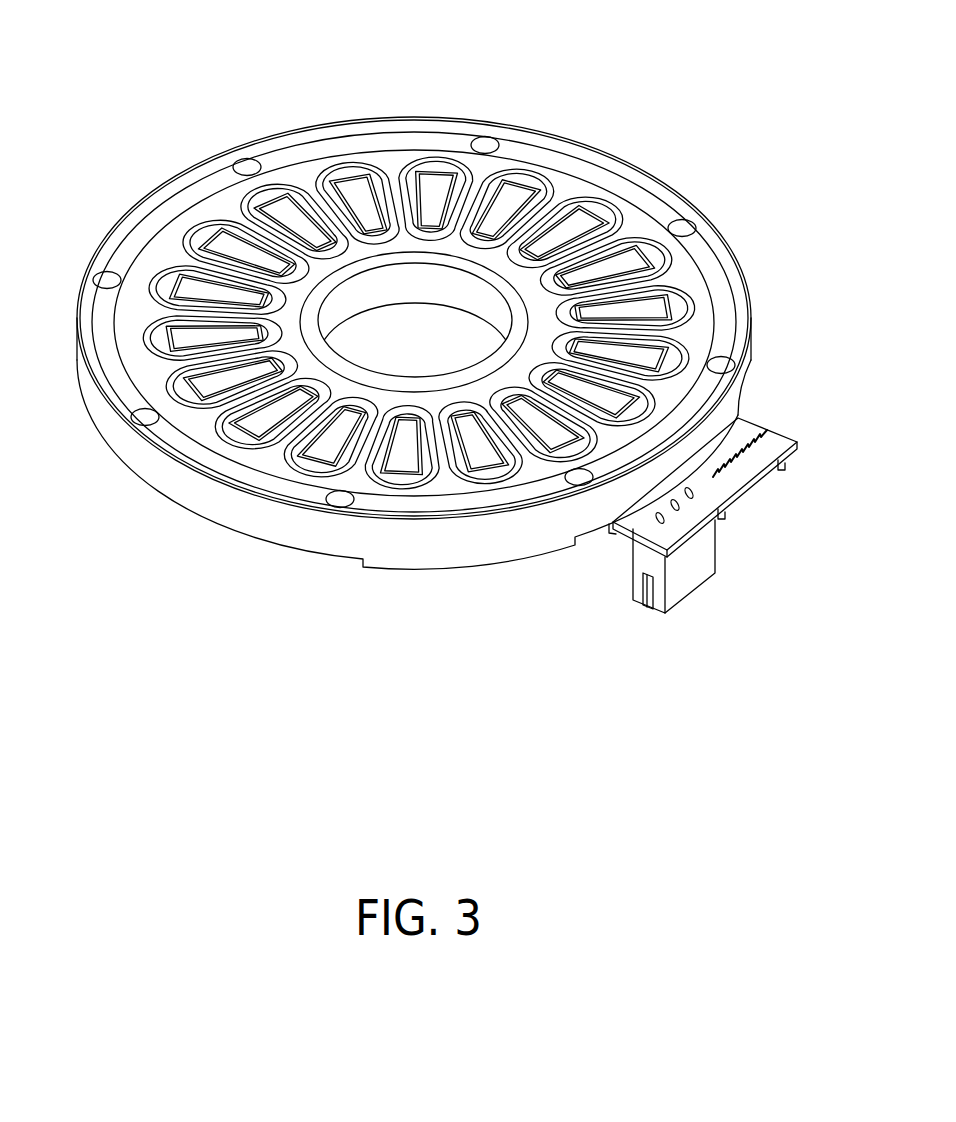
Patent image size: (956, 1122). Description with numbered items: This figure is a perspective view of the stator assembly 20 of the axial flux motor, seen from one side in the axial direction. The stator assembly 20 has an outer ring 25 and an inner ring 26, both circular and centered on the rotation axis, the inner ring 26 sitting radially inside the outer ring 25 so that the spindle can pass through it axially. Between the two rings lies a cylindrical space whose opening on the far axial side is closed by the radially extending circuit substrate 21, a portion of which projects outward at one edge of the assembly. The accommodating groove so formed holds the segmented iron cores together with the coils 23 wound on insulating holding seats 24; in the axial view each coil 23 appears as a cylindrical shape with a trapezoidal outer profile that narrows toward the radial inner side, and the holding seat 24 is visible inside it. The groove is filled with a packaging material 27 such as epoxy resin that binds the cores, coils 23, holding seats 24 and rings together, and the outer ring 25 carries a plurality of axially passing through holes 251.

The stator assembly 20 is at (94, 818).
The circuit substrate 21 is at (752, 420).
The coil 23 is at (183, 227).
The holding seat 24 is at (232, 243).
The outer ring 25 is at (310, 148).
The through hole 251 is at (690, 218).
The inner ring 26 is at (478, 262).
The packaging material 27 is at (688, 285).